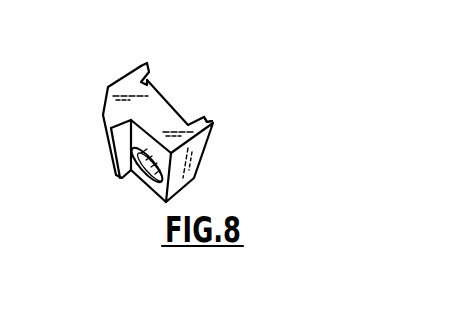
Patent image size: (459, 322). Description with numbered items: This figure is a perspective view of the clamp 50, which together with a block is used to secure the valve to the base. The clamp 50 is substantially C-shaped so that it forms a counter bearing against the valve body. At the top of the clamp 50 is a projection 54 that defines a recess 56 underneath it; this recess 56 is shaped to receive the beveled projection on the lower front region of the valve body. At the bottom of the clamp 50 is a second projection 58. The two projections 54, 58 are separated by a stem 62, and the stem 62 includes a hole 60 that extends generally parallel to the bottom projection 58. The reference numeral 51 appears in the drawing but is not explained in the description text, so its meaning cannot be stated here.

The clamp 50 is at (236, 77).
The body 51 is at (102, 113).
The projection 54 is at (141, 66).
The recess 56 is at (151, 81).
The projection 58 is at (211, 124).
The hole 60 is at (147, 173).
The stem 62 is at (163, 119).